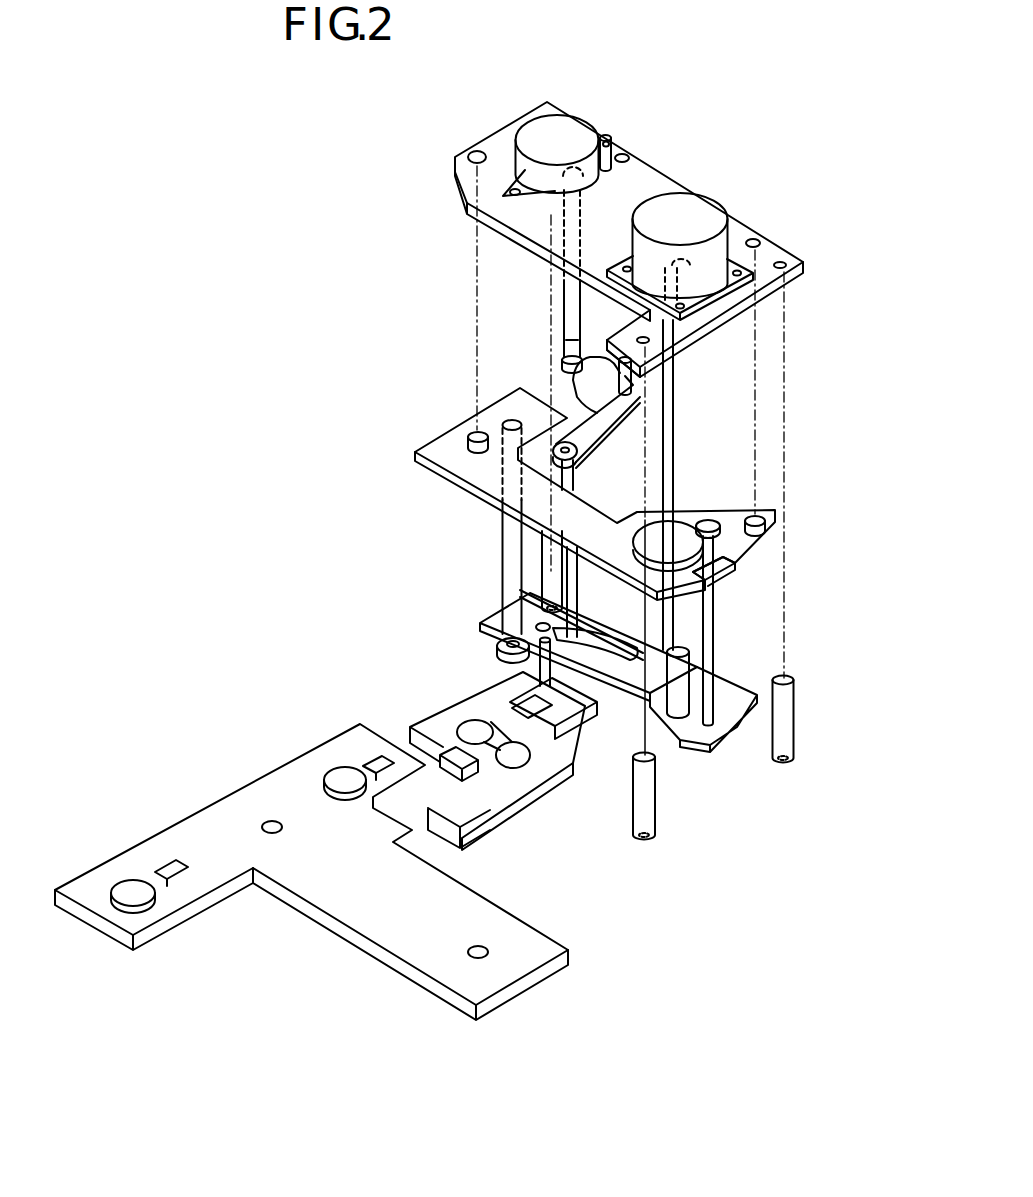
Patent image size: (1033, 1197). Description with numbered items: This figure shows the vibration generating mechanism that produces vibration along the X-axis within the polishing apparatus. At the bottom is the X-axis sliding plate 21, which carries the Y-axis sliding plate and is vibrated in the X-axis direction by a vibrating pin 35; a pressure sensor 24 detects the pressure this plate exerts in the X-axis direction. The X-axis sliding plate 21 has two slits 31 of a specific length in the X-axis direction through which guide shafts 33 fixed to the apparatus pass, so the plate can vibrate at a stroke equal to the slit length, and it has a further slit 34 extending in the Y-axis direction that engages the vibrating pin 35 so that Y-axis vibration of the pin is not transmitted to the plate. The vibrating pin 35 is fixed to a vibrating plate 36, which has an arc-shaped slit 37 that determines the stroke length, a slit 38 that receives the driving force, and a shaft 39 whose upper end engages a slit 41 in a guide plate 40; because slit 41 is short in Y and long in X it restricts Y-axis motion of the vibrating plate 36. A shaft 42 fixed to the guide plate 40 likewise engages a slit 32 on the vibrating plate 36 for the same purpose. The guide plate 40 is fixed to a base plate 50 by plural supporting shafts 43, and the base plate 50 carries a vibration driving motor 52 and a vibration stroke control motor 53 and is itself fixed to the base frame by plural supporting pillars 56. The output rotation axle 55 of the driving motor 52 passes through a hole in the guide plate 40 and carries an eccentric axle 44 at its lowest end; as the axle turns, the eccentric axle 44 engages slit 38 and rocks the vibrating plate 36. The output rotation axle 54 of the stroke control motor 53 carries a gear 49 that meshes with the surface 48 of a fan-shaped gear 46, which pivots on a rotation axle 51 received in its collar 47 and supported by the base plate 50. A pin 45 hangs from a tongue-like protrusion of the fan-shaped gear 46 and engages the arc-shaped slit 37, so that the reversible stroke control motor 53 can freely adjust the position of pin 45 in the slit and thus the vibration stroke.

The X-axis sliding plate 21 is at (220, 800).
The pressure sensor 24 is at (447, 755).
The slit 31 is at (375, 767).
The slit 32 is at (483, 617).
The guide shaft 33 is at (130, 890).
The slit 34 is at (553, 688).
The vibrating pin 35 is at (553, 680).
The vibrating plate 36 is at (643, 712).
The arc-shaped slit 37 is at (583, 607).
The slit 38 is at (645, 757).
The shaft 39 is at (723, 733).
The guide plate 40 is at (733, 560).
The slit 41 is at (730, 567).
The shaft 42 is at (510, 583).
The supporting shaft 43 is at (467, 427).
The eccentric axle 44 is at (683, 703).
The pin 45 is at (577, 480).
The fan-shaped gear 46 is at (627, 446).
The collar 47 is at (633, 378).
The surface 48 is at (548, 378).
The gear 49 is at (550, 357).
The base plate 50 is at (803, 288).
The rotation axle 51 is at (632, 146).
The vibration driving motor 52 is at (703, 208).
The vibration stroke control motor 53 is at (577, 127).
The output rotation axle 54 is at (555, 283).
The output rotation axle 55 is at (645, 372).
The supporting pillar 56 is at (545, 565).